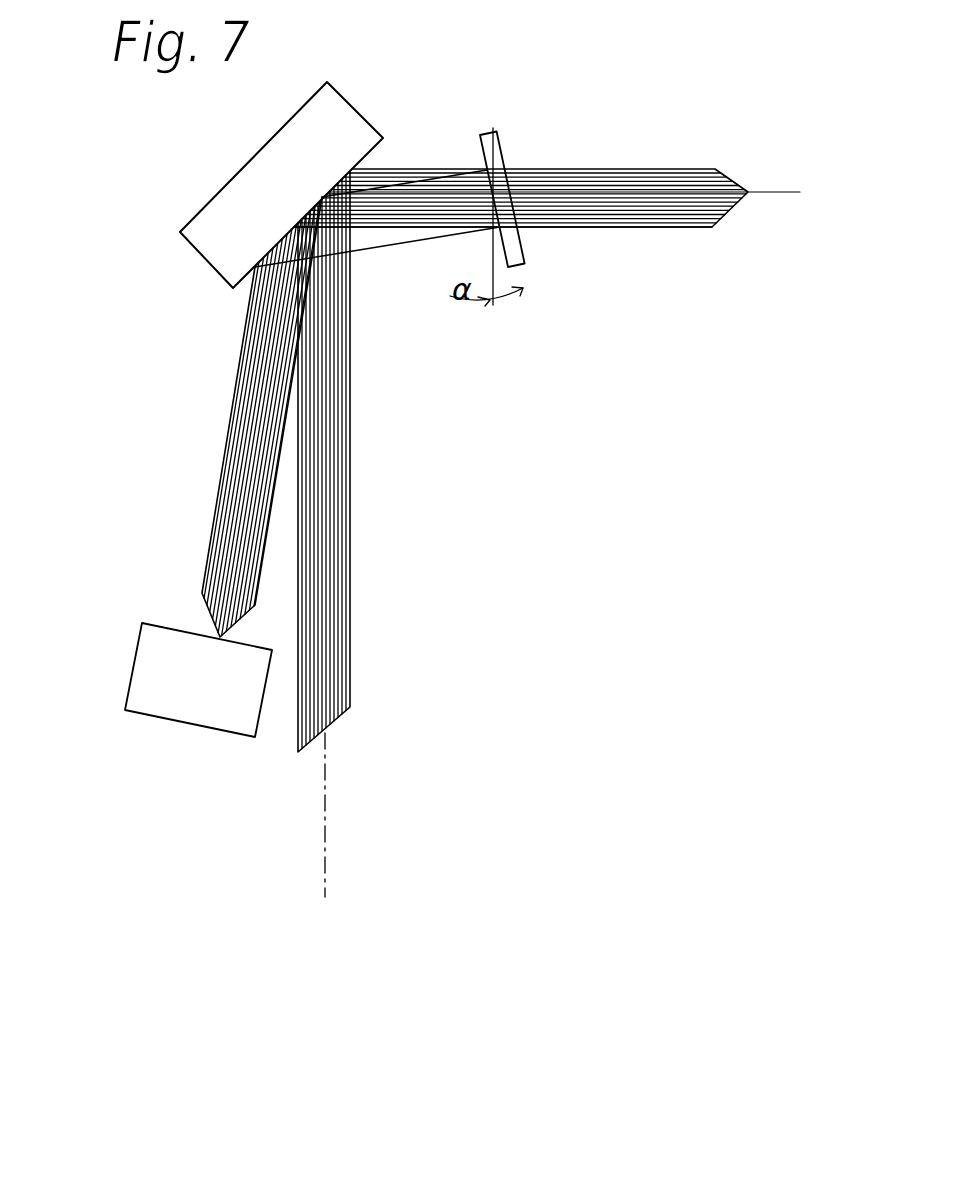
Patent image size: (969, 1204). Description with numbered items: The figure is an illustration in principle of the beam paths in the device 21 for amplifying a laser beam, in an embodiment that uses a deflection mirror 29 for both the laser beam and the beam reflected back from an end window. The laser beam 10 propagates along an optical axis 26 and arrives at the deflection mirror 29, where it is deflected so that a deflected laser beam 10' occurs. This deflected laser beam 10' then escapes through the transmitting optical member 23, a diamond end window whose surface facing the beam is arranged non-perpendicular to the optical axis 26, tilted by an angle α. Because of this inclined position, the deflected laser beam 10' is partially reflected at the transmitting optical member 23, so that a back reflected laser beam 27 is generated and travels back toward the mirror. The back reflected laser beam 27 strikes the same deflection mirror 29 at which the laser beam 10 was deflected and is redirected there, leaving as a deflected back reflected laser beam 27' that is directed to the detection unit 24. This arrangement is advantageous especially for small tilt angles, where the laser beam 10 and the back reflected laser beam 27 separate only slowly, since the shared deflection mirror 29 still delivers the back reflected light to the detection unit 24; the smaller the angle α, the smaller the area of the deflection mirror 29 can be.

The deflection mirror 29 is at (205, 236).
The back reflected laser beam 27 is at (377, 304).
The deflected back reflected laser beam 27' is at (178, 417).
The transmitting optical member 23 is at (514, 267).
The deflected laser beam 10' is at (521, 274).
The laser beam 10 is at (422, 522).
The optical axis 26 is at (775, 192).
The detection unit 24 is at (195, 715).
The device for amplifying the laser beam 21 is at (652, 565).